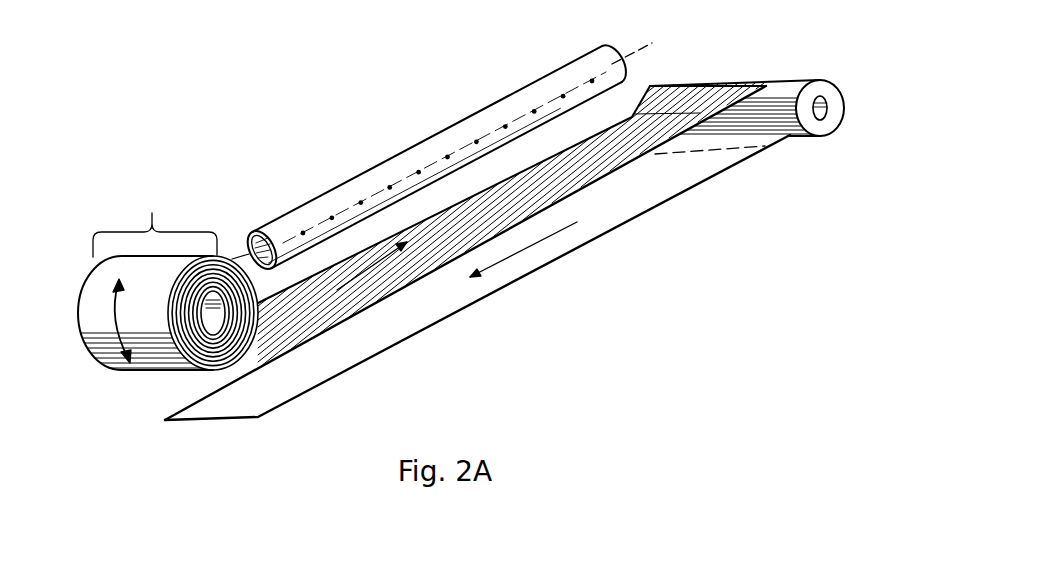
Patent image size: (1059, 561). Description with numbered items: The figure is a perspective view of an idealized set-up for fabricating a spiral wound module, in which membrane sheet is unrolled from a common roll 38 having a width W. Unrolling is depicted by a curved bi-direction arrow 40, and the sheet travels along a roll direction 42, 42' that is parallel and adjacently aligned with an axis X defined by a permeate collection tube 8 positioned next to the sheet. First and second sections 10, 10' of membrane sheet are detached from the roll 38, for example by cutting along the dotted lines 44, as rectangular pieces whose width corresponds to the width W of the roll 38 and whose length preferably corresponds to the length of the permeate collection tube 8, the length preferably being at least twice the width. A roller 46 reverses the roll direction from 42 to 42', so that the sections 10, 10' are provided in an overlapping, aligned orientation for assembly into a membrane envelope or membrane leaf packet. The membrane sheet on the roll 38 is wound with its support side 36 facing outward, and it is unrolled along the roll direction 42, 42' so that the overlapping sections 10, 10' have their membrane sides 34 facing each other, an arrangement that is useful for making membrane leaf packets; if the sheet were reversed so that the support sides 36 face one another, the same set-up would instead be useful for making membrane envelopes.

The permeate collection tube 8 is at (432, 138).
The first section of membrane sheet 10 is at (735, 67).
The second section of membrane sheet 10' is at (477, 253).
The membrane side 34 is at (258, 408).
The support side 36 is at (203, 421).
The roll 38 is at (88, 279).
The curved bi-direction arrow 40 is at (112, 322).
The roll direction 42 is at (512, 225).
The reversed roll direction 42' is at (544, 262).
The dotted lines 44 is at (633, 115).
The roller 46 is at (802, 82).
The width W is at (155, 221).
The axis X is at (645, 50).